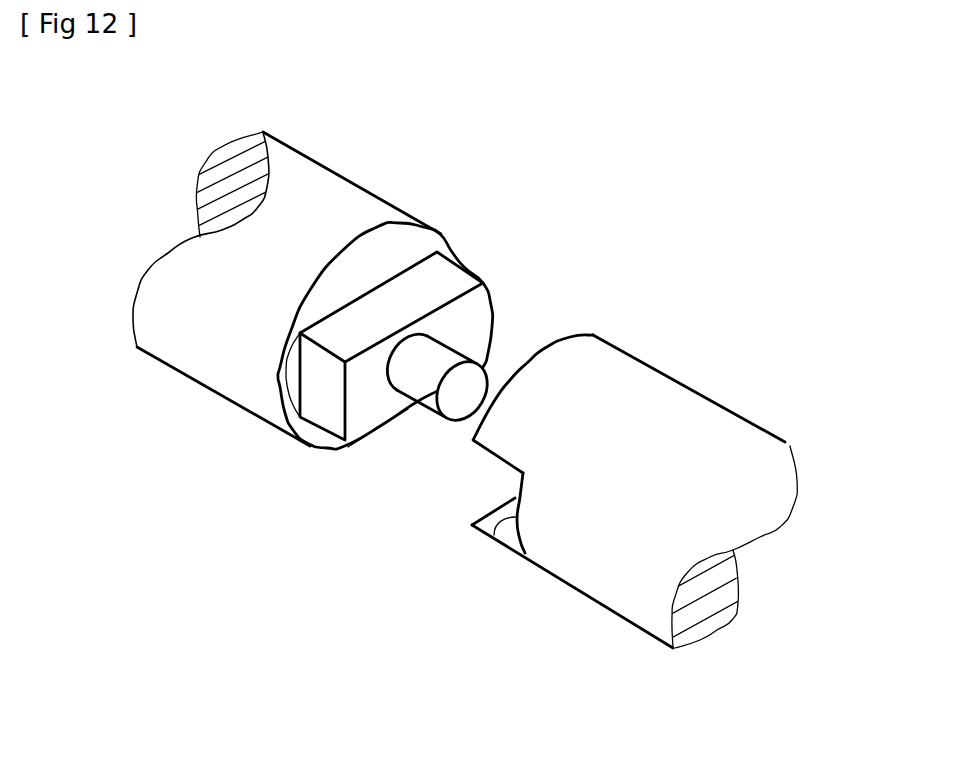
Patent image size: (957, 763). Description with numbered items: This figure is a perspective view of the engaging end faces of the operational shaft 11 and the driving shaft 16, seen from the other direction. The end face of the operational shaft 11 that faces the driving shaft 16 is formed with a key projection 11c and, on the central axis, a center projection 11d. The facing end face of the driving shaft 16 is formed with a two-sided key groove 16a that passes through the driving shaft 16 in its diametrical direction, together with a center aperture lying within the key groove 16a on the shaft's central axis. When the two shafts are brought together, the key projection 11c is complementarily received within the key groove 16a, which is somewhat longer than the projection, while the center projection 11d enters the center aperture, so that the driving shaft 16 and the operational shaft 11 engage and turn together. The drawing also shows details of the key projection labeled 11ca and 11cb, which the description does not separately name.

The operational shaft 11 is at (328, 183).
The key projection 11c is at (492, 295).
The projection 11ca is at (415, 280).
The recess 11cb is at (365, 443).
The center projection 11d is at (432, 408).
The driving shaft 16 is at (718, 427).
The key groove 16a is at (494, 535).